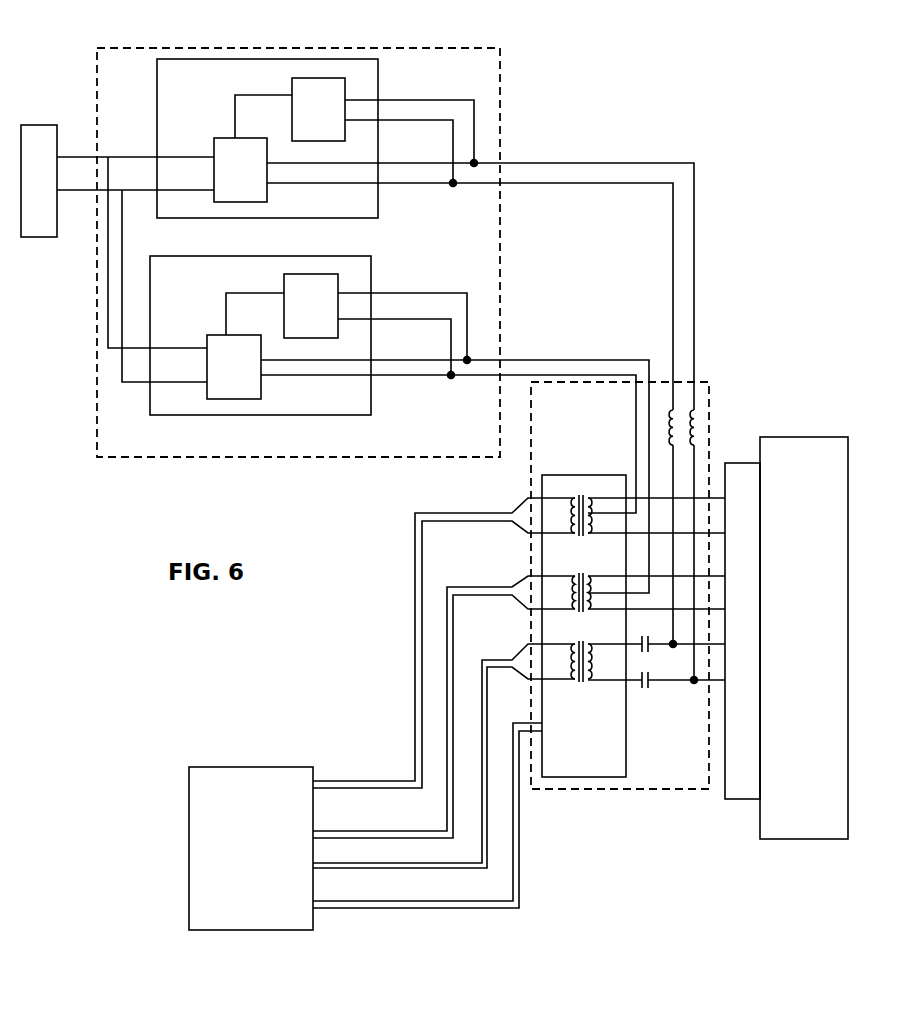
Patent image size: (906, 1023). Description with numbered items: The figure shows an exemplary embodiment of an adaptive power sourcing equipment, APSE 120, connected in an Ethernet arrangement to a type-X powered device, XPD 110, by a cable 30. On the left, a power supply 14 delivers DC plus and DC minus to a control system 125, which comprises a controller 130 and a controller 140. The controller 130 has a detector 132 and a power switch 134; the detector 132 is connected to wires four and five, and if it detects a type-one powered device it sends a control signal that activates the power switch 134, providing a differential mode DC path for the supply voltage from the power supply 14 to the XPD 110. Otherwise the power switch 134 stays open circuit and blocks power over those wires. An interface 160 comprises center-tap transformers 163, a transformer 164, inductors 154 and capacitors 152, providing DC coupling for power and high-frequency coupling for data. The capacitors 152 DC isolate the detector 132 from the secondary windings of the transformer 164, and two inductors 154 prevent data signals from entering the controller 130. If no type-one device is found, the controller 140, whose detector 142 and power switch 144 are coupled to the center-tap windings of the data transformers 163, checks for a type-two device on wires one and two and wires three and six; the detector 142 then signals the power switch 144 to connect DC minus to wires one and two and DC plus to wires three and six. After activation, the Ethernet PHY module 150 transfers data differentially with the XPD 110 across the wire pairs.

The power supply 14 is at (33, 125).
The cable 30 is at (713, 492).
The type-X powered device (XPD) 110 is at (775, 437).
The adaptive power sourcing equipment (APSE) 120 is at (667, 131).
The control system 125 is at (290, 47).
The controller 130 is at (324, 58).
The detector 132 is at (291, 137).
The power switch 134 is at (228, 137).
The controller 140 is at (367, 255).
The detector 142 is at (285, 274).
The power switch 144 is at (217, 335).
The Ethernet PHY module 150 is at (262, 766).
The capacitors 152 is at (653, 652).
The inductors 154 is at (696, 409).
The interface 160 is at (627, 790).
The center-tap transformers 163 is at (584, 492).
The transformer 164 is at (590, 687).